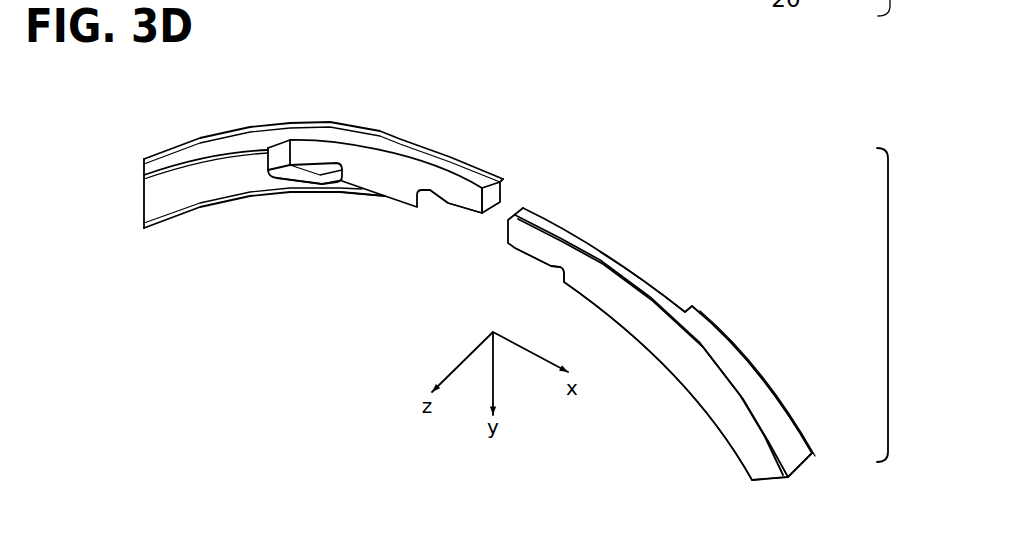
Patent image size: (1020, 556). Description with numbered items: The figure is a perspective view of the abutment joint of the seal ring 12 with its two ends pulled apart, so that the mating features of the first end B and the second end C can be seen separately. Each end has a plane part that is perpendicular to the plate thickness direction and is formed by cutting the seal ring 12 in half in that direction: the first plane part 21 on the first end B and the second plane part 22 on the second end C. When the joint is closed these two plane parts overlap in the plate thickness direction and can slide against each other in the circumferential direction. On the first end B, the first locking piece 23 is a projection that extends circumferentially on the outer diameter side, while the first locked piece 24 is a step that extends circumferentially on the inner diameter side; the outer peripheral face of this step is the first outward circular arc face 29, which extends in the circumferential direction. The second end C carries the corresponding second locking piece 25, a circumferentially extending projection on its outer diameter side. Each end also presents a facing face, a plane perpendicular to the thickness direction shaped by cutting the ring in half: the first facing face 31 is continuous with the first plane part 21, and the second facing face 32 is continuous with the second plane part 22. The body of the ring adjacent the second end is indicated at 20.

The seal ring 12 is at (901, 305).
The second ring segment body 20 is at (770, 419).
The first plane part 21 is at (307, 148).
The second plane part 22 is at (665, 292).
The first locking piece 23 is at (450, 188).
The first locked piece 24 is at (293, 187).
The second locking piece 25 is at (545, 248).
The first outward circular arc face 29 is at (312, 172).
The first facing face 31 is at (372, 172).
The second facing face 32 is at (613, 255).
The first end B is at (200, 122).
The second end C is at (745, 322).